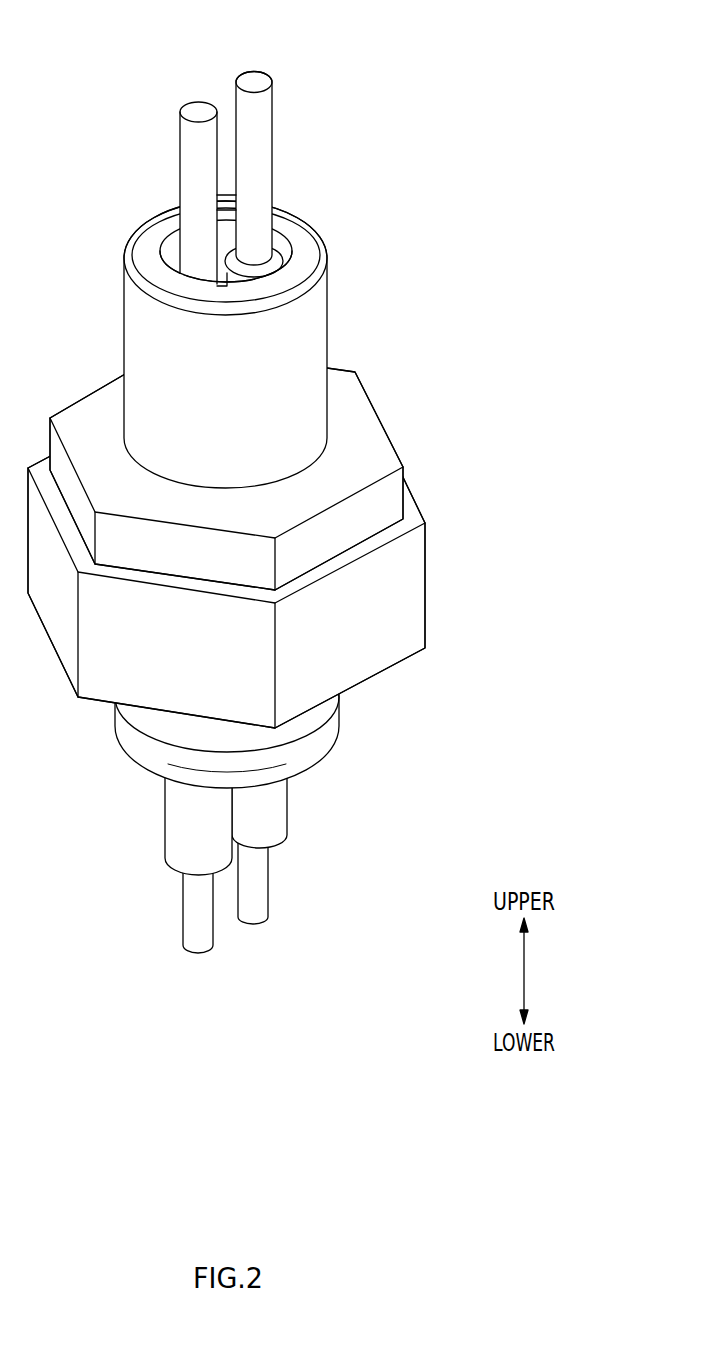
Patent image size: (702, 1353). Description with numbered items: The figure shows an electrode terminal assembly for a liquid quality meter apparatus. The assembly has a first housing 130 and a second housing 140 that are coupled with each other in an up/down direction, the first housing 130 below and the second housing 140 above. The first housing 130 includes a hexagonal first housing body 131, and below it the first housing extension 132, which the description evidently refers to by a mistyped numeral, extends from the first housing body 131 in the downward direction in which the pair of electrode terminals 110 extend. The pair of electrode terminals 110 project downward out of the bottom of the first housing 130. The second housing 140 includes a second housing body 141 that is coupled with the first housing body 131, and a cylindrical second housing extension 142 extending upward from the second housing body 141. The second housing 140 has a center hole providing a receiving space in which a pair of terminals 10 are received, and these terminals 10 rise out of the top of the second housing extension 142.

The pair of terminals 10 is at (253, 81).
The pair of electrode terminals 110 is at (197, 923).
The first housing 130 is at (309, 631).
The first housing body 131 is at (275, 558).
The lower body 132 is at (270, 800).
The second housing 140 is at (300, 395).
The second housing body 141 is at (357, 438).
The second housing extension 142 is at (285, 344).